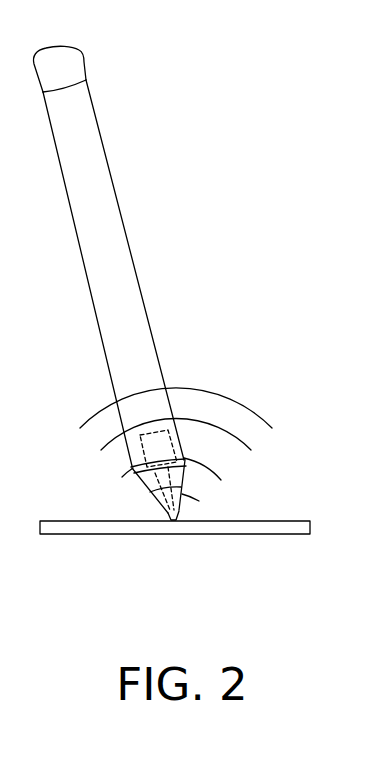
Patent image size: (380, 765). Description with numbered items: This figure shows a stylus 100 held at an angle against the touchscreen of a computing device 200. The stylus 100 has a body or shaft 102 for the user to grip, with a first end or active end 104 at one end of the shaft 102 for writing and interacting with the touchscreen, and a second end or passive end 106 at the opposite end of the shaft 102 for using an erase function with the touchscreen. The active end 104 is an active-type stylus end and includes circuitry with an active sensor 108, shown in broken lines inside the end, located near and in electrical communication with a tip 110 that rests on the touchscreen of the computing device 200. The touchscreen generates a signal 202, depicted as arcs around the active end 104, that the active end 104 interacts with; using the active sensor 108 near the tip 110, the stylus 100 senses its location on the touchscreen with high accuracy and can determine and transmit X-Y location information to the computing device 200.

The stylus 100 is at (170, 233).
The shaft 102 is at (98, 167).
The active end 104 is at (150, 489).
The passive end 106 is at (70, 70).
The active sensor 108 is at (140, 460).
The tip 110 is at (172, 523).
The computing device 200 is at (295, 521).
The signal 202 is at (214, 380).